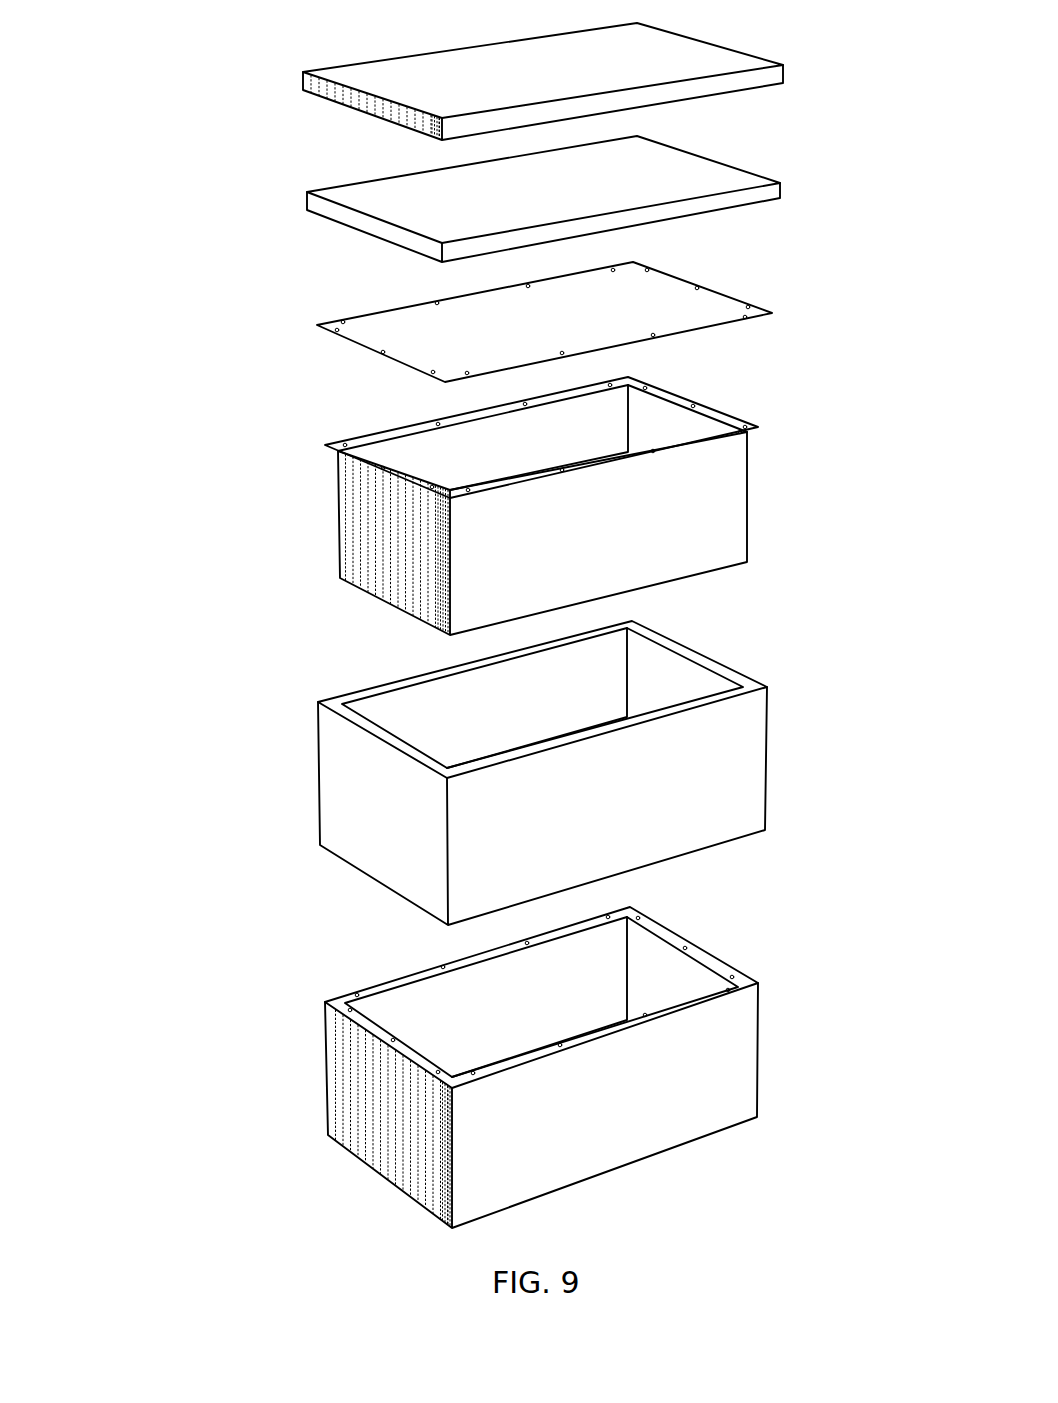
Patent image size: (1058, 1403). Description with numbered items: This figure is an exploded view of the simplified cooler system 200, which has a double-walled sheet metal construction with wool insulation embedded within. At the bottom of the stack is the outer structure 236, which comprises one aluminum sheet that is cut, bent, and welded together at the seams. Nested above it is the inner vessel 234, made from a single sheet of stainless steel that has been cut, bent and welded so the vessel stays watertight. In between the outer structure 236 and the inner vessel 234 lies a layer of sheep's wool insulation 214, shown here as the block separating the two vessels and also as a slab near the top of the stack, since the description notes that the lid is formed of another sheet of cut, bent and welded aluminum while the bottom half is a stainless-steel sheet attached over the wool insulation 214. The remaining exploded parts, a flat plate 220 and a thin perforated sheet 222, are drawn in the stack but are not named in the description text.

The cooler system 200 is at (195, 1250).
The cover plate 220 is at (380, 103).
The sheep's wool insulation 214 is at (715, 199).
The gasket 222 is at (398, 329).
The inner vessel 234 is at (403, 536).
The outer structure 236 is at (390, 1080).